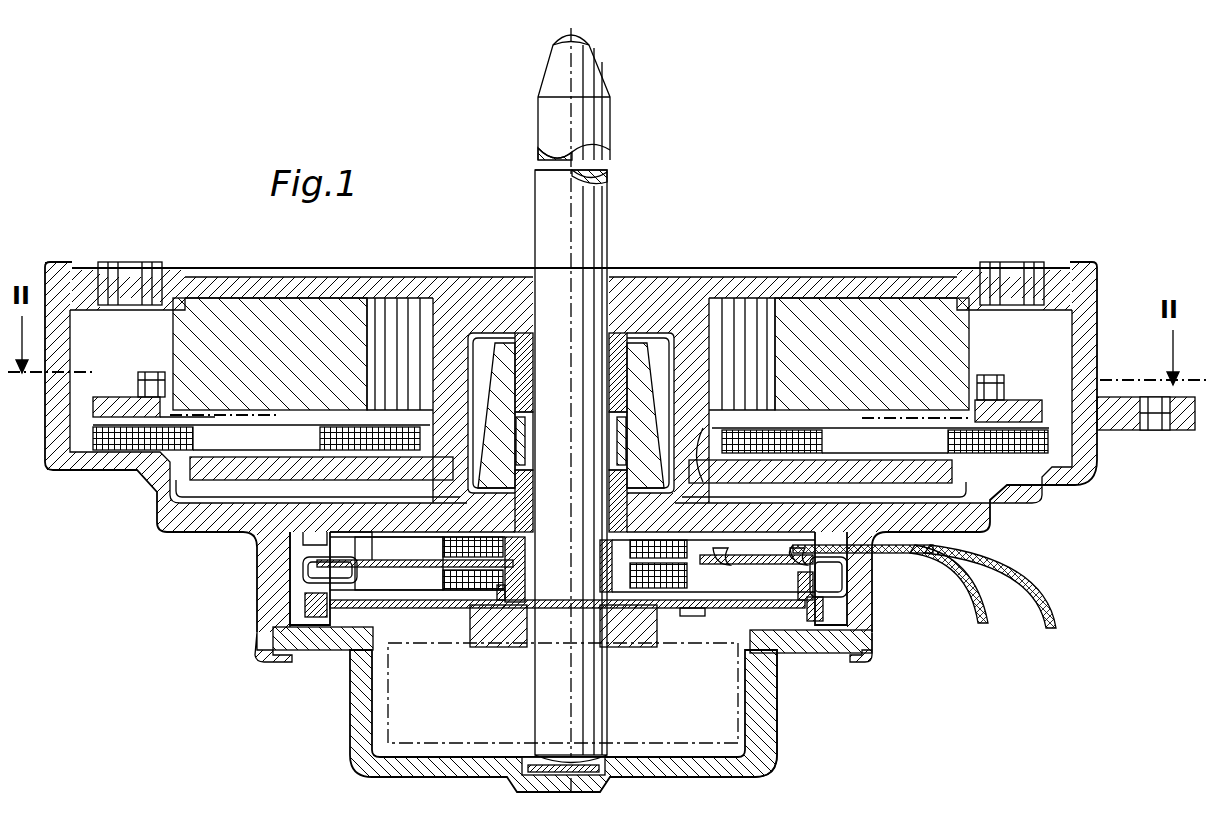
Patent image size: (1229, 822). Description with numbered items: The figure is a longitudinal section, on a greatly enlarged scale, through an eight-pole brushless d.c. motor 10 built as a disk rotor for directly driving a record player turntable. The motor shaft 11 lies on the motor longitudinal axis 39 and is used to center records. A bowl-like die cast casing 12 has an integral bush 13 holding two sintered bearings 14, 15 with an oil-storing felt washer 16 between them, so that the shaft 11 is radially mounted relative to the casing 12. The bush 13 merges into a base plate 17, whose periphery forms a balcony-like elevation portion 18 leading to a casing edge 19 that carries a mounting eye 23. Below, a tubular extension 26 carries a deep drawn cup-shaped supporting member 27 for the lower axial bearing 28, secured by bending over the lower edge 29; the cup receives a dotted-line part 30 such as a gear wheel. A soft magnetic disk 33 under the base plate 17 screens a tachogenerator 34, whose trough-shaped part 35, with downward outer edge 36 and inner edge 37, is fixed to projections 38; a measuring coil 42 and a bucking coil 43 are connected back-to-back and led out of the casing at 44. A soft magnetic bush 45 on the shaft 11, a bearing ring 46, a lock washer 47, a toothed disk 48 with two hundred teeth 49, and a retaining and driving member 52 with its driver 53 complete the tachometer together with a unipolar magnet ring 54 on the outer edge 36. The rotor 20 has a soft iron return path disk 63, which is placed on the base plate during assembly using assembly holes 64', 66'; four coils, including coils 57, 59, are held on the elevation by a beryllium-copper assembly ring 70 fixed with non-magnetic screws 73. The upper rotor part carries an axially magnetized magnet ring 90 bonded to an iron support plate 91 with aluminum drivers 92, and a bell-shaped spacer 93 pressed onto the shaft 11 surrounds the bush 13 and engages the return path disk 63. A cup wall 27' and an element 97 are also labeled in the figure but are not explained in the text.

The brushless d.c. motor 10 is at (75, 258).
The motor shaft 11 is at (598, 120).
The casing 12 is at (78, 478).
The bush 13 is at (646, 390).
The sintered bearing 14 is at (531, 366).
The sintered bearing 15 is at (524, 482).
The felt washer 16 is at (527, 432).
The base plate 17 is at (872, 556).
The elevation portion 18 is at (1040, 488).
The casing edge 19 is at (1092, 373).
The rotor 20 is at (404, 270).
The mounting eye 23 is at (1180, 432).
The tubular extension 26 is at (273, 598).
The supporting member 27 is at (533, 721).
The cup wall 27' is at (799, 713).
The lower axial bearing 28 is at (606, 784).
The lower edge 29 is at (262, 656).
The gear wheel 30 is at (740, 686).
The disk 33 is at (392, 567).
The tachogenerator 34 is at (298, 574).
The trough-shaped part 35 is at (432, 567).
The outer edge 36 is at (303, 608).
The inner edge 37 is at (520, 582).
The projections 38 is at (310, 548).
The motor longitudinal axis 39 is at (573, 213).
The measuring coil 42 is at (455, 605).
The bucking coil 43 is at (690, 570).
The connections 44 is at (1052, 628).
The bush 45 is at (528, 548).
The bearing ring 46 is at (690, 614).
The lock washer 47 is at (576, 608).
The soft magnetic disk 48 is at (730, 604).
The teeth 49 is at (810, 604).
The retaining and driving member 52 is at (624, 650).
The driver 53 is at (490, 648).
The magnet ring 54 is at (318, 652).
The coil 57 is at (852, 455).
The coil 59 is at (228, 447).
The return path disk 63 is at (872, 480).
The assembly hole 64' is at (873, 578).
The assembly hole 66' is at (321, 453).
The assembly ring 70 is at (110, 408).
The screws 73 is at (150, 385).
The magnet ring 90 is at (290, 322).
The support plate 91 is at (205, 280).
The drivers 92 is at (142, 272).
The spacer 93 is at (690, 352).
The spring 97 is at (703, 428).